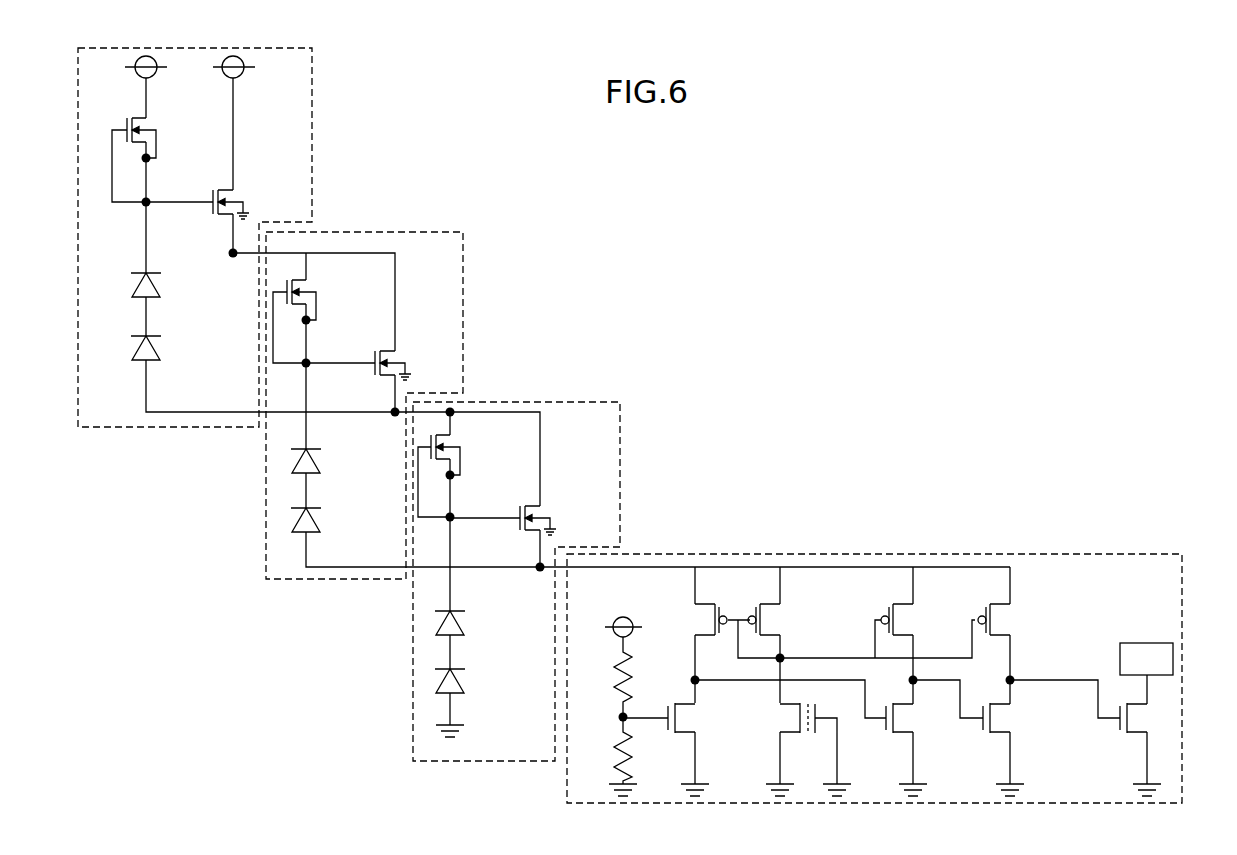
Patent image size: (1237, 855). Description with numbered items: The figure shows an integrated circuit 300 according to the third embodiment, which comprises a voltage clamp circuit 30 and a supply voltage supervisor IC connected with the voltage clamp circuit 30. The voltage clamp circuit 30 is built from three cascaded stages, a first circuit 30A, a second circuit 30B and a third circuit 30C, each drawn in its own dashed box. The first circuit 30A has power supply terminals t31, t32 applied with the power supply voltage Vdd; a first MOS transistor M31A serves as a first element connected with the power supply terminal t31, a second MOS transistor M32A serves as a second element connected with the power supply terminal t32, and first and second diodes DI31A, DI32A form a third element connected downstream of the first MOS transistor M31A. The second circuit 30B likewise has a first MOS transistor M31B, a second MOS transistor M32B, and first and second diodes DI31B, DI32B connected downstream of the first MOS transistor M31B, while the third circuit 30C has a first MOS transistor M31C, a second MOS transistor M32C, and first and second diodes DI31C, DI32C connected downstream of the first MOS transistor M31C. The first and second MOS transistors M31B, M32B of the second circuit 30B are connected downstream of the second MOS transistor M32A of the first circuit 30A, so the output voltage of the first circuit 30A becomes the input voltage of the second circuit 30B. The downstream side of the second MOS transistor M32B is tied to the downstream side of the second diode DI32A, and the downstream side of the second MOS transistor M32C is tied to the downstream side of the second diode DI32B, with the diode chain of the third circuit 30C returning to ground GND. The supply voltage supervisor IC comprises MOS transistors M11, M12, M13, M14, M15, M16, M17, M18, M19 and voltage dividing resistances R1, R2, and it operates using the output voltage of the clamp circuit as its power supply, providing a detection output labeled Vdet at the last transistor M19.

The integrated circuit 300 is at (882, 248).
The voltage clamp circuit 30 is at (658, 172).
The first circuit 30A is at (312, 115).
The second circuit 30B is at (463, 283).
The third circuit 30C is at (543, 400).
The supply voltage supervisor IC is at (912, 553).
The power supply terminal t31 is at (126, 67).
The power supply terminal t32 is at (255, 67).
The first MOS transistor M31A is at (165, 142).
The second MOS transistor M32A is at (229, 168).
The first diode DI31A is at (181, 269).
The second diode DI32A is at (263, 373).
The first MOS transistor M31B is at (326, 310).
The second MOS transistor M32B is at (386, 384).
The first diode DI31B is at (344, 435).
The second diode DI32B is at (415, 537).
The first MOS transistor M31C is at (472, 465).
The second MOS transistor M32C is at (534, 539).
The first diode DI31C is at (488, 593).
The second diode DI32C is at (488, 697).
The ground GND is at (450, 743).
The power supply voltage Vdd is at (614, 619).
The voltage dividing resistance R1 is at (608, 682).
The voltage dividing resistance R2 is at (611, 755).
The MOS transistor M11 is at (706, 635).
The MOS transistor M12 is at (856, 635).
The MOS transistor M13 is at (679, 749).
The MOS transistor M14 is at (801, 749).
The MOS transistor M15 is at (884, 635).
The MOS transistor M16 is at (811, 738).
The MOS transistor M17 is at (982, 635).
The MOS transistor M18 is at (968, 738).
The MOS transistor M19 is at (1097, 735).
The detection output voltage Vdet is at (1146, 659).